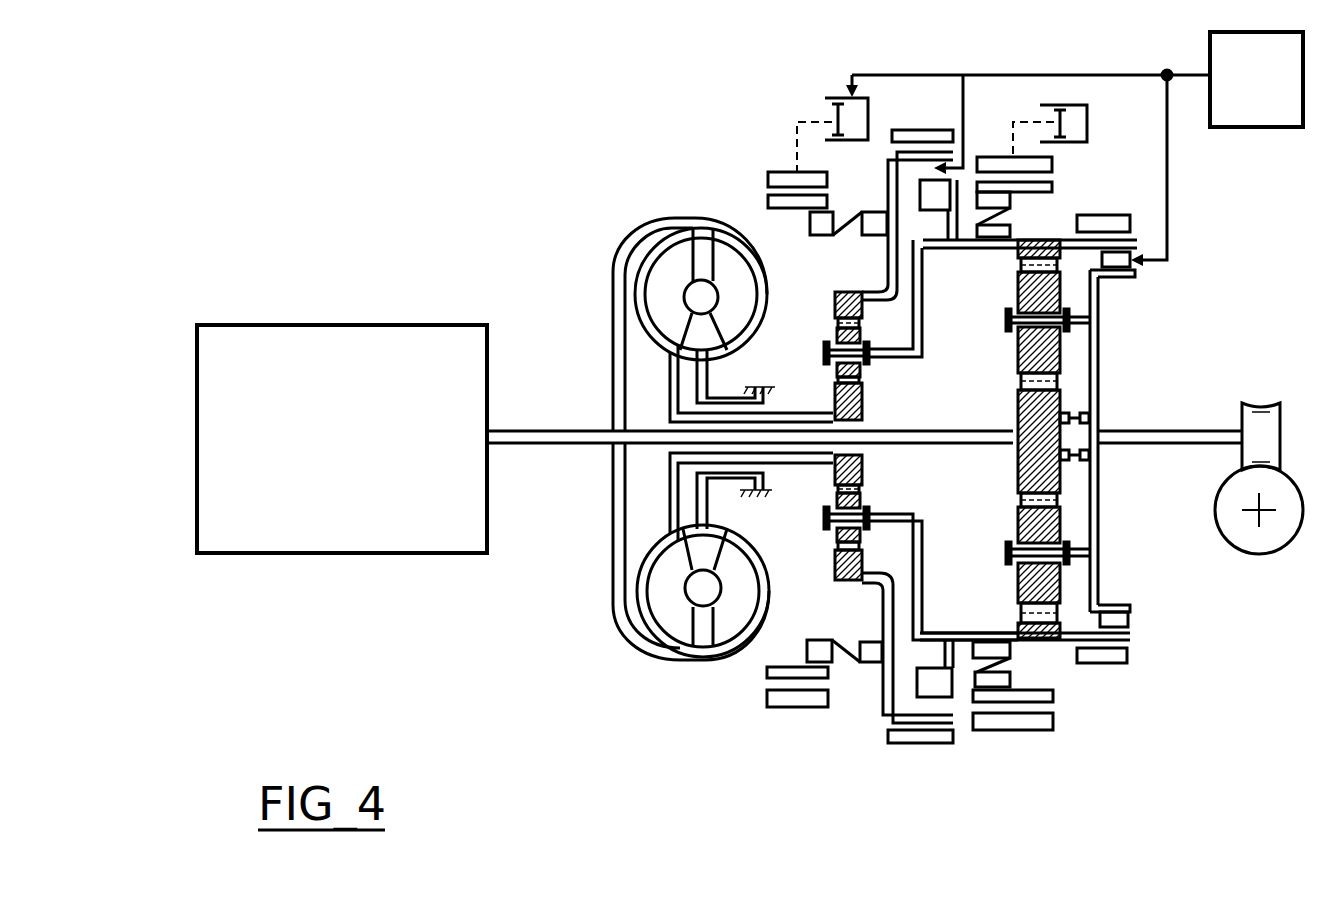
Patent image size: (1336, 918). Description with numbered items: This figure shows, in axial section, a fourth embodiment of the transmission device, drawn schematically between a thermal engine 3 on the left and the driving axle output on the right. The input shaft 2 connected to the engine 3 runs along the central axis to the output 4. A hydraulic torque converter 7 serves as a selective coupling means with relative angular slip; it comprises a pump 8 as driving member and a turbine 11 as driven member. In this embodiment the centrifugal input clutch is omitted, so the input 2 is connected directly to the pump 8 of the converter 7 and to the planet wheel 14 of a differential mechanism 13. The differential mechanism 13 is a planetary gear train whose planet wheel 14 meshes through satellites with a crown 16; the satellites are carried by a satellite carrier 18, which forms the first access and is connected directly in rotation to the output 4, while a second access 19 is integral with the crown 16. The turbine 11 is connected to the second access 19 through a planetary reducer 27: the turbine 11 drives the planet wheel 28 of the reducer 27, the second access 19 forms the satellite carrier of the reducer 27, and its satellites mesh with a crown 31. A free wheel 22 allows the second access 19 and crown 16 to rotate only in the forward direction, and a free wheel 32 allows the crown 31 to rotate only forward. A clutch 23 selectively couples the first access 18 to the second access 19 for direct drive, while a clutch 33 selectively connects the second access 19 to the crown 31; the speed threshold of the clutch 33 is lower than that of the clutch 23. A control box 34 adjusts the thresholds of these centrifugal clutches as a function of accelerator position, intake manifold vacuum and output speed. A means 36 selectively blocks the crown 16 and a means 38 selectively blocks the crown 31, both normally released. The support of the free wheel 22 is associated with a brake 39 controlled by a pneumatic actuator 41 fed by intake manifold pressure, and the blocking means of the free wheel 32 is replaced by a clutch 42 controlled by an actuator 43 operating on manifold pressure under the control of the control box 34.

The input shaft 2 is at (546, 447).
The thermal engine 3 is at (346, 556).
The output 4 is at (1188, 430).
The hydraulic torque converter 7 is at (662, 680).
The pump 8 is at (752, 650).
The turbine 11 is at (655, 540).
The differential mechanism 13 is at (1000, 359).
The planet wheel 14 is at (1035, 415).
The crown 16 is at (1042, 640).
The satellite carrier 18 is at (1100, 508).
The second access 19 is at (918, 297).
The free wheel 22 is at (1012, 676).
The clutch 23 is at (1147, 624).
The planetary reducer 27 is at (846, 284).
The planet wheel 28 is at (865, 470).
The crown 31 is at (841, 572).
The free wheel 32 is at (845, 668).
The clutch 33 is at (950, 708).
The control box 34 is at (1255, 127).
The means for selective blocking of the crown 36 is at (1130, 655).
The means for selective blocking of the crown 38 is at (917, 745).
The brake 39 is at (1033, 731).
The pneumatic actuator 41 is at (1087, 130).
The clutch 42 is at (770, 175).
The actuator 43 is at (870, 105).